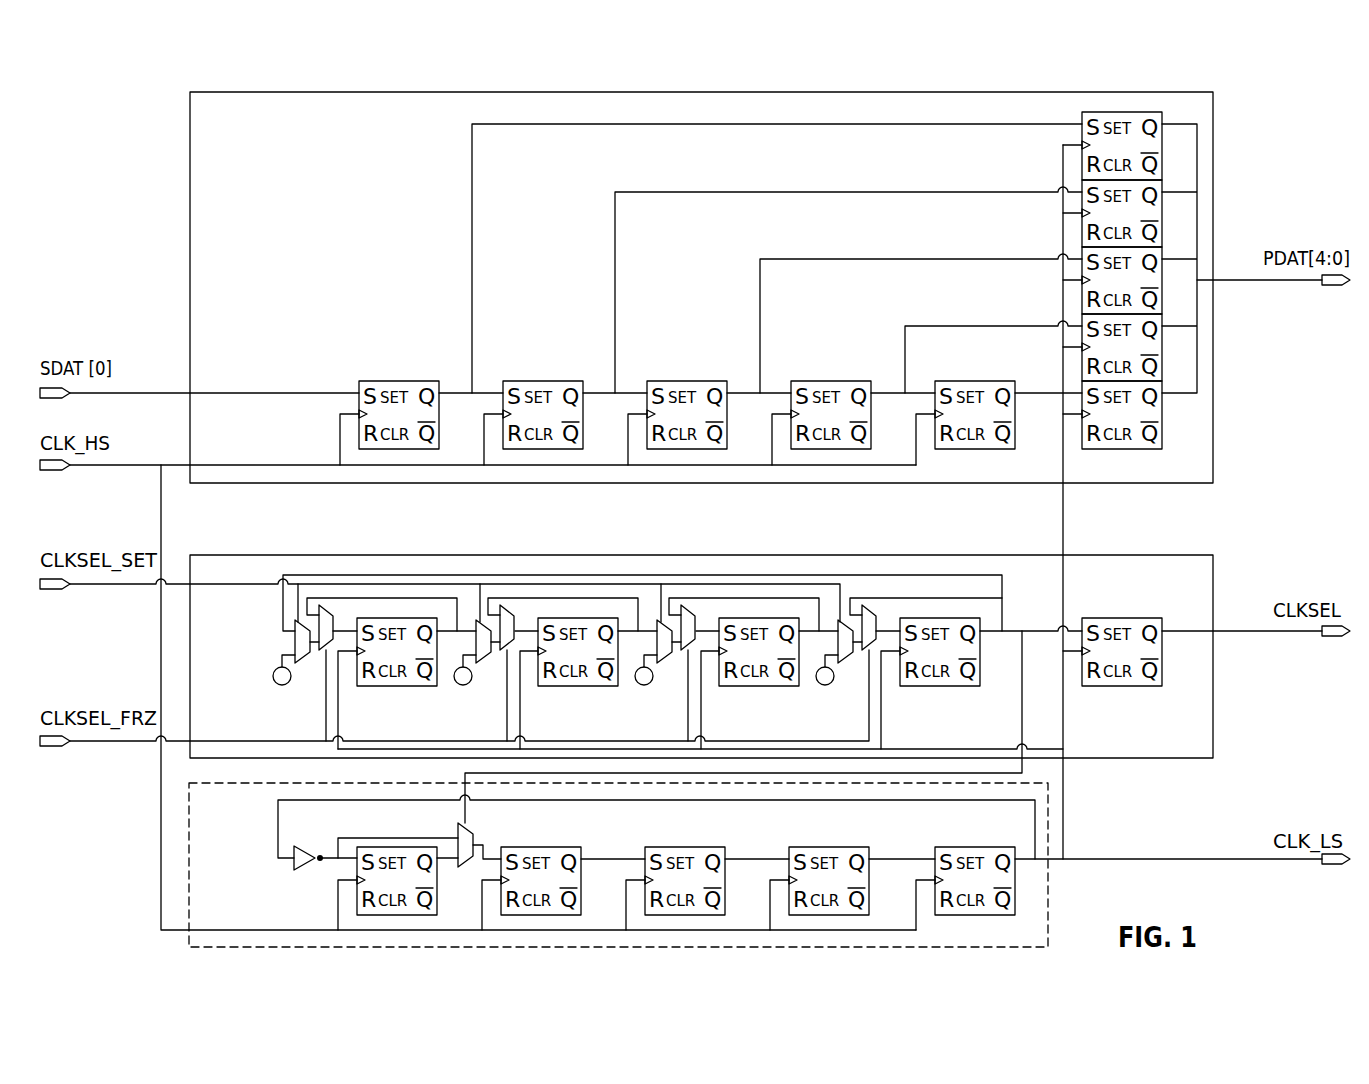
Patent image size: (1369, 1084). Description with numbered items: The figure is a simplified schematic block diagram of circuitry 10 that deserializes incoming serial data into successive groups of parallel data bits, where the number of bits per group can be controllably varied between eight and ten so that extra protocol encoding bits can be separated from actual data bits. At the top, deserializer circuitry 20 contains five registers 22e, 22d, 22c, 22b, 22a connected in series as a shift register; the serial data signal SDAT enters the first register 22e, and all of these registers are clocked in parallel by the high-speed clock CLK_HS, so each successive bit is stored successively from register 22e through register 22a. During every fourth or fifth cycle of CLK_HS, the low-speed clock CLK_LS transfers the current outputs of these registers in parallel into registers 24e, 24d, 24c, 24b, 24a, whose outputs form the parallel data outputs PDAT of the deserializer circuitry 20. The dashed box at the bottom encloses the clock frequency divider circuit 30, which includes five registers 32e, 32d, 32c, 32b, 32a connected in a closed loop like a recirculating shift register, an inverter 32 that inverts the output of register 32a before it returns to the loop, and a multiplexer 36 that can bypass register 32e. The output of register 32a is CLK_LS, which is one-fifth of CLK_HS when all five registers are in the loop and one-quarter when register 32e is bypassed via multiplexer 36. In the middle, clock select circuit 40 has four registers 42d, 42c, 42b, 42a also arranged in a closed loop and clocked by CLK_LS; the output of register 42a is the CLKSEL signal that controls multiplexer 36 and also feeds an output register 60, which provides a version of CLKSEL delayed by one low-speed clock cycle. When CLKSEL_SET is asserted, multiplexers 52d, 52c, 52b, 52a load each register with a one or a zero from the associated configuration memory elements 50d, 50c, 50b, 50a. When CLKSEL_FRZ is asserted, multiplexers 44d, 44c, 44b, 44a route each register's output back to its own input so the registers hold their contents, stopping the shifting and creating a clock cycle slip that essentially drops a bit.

The circuitry 10 is at (116, 98).
The deserializer circuitry 20 is at (190, 287).
The register 22a is at (1009, 381).
The register 22b is at (865, 381).
The register 22c is at (721, 381).
The register 22d is at (577, 381).
The register 22e is at (433, 381).
The register 24a is at (1162, 418).
The register 24b is at (1162, 350).
The register 24c is at (1080, 275).
The register 24d is at (1080, 208).
The register 24e is at (1080, 140).
The clock frequency divider circuit 30 is at (189, 868).
The registers 32 is at (303, 868).
The register 32a is at (1001, 847).
The register 32b is at (855, 847).
The register 32c is at (711, 847).
The register 32d is at (567, 847).
The register 32e is at (385, 847).
The multiplexer 36 is at (458, 830).
The clock select circuit 40 is at (1213, 660).
The register 42a is at (969, 687).
The register 42b is at (755, 687).
The register 42c is at (574, 687).
The register 42d is at (393, 687).
The multiplexer 44a is at (869, 605).
The multiplexer 44b is at (688, 605).
The multiplexer 44c is at (507, 605).
The multiplexer 44d is at (326, 605).
The configuration memory cell 50a is at (825, 685).
The configuration memory cell 50b is at (644, 685).
The configuration memory cell 50c is at (463, 685).
The configuration memory cell 50d is at (282, 685).
The multiplexer 52a is at (846, 663).
The multiplexer 52b is at (665, 663).
The multiplexer 52c is at (484, 663).
The multiplexer 52d is at (303, 663).
The output register 60 is at (1133, 687).